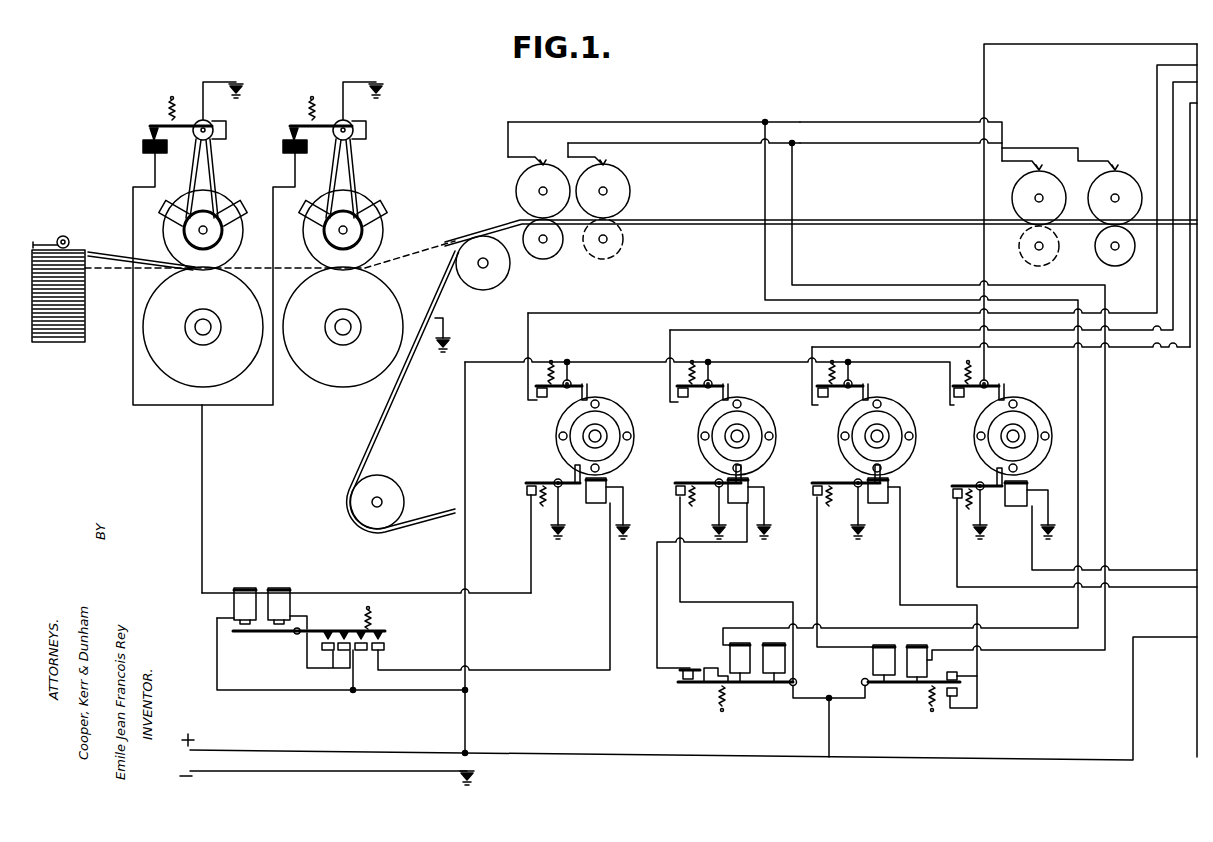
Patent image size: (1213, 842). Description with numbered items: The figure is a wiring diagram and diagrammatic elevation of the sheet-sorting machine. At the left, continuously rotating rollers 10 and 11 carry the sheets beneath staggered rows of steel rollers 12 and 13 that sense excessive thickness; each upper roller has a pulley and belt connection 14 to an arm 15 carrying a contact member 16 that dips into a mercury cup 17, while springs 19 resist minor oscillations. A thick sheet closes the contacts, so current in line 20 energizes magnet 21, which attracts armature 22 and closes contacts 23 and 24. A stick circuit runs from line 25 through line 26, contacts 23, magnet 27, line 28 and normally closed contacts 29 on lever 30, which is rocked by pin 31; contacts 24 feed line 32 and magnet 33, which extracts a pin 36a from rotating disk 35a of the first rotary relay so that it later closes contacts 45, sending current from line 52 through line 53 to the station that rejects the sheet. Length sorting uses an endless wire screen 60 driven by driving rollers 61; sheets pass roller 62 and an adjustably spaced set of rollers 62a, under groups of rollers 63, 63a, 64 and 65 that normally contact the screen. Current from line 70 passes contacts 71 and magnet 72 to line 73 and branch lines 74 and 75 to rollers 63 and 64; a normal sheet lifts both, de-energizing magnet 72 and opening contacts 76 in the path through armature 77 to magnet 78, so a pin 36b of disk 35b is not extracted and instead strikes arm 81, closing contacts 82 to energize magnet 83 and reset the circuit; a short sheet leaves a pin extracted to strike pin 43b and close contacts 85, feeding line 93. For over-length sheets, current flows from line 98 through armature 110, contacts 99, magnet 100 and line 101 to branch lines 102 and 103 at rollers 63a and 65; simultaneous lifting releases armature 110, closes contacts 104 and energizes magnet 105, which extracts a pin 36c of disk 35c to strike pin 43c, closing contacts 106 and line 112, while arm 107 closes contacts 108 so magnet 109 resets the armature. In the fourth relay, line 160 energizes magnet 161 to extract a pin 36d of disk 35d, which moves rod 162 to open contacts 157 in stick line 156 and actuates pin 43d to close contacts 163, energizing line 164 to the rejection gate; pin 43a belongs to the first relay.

The roller 10 is at (240, 302).
The roller 11 is at (376, 296).
The row of steel rollers 12 is at (239, 240).
The row of steel rollers 13 is at (380, 237).
The pulley and belt connection 14 is at (218, 172).
The arm 15 is at (200, 119).
The contact member 16 is at (149, 134).
The mercury cup 17 is at (143, 150).
The spring 19 is at (168, 103).
The line 20 is at (217, 499).
The magnet 21 is at (234, 606).
The armature 22 is at (251, 634).
The contacts 23 is at (333, 663).
The contacts 24 is at (368, 663).
The line 25 is at (399, 750).
The line 26 is at (435, 692).
The magnet 27 is at (291, 606).
The line 28 is at (498, 580).
The contacts 29 is at (528, 494).
The lever 30 is at (529, 486).
The pin 31 is at (572, 480).
The line 32 is at (586, 671).
The magnet 33 is at (590, 503).
The rotating disk 35a is at (632, 425).
The rotating disk 35b is at (772, 420).
The rotating disk 35c is at (907, 418).
The rotating disk 35d is at (1013, 436).
The pins 36a is at (560, 433).
The pins 36b is at (745, 470).
The pins 36c is at (887, 470).
The pins 36d is at (1023, 470).
The pin 43a is at (588, 391).
The pin 43b is at (730, 391).
The pin 43c is at (870, 391).
The pin 43d is at (1007, 391).
The contacts 45 is at (535, 393).
The line 52 is at (470, 412).
The line 53 is at (722, 315).
The endless wire screen 60 is at (714, 218).
The driving rollers 61 is at (505, 282).
The roller 62 is at (590, 256).
The rollers 62a is at (1052, 260).
The group of rollers 63 is at (516, 191).
The group of rollers 63a is at (630, 191).
The group of rollers 64 is at (1012, 206).
The group of rollers 65 is at (1092, 190).
The line 70 is at (824, 691).
The contacts 71 is at (708, 668).
The magnet 72 is at (742, 656).
The line 73 is at (765, 262).
The line 74 is at (702, 119).
The line 75 is at (907, 124).
The contacts 76 is at (683, 675).
The armature 77 is at (750, 687).
The magnet 78 is at (747, 505).
The arm 81 is at (726, 478).
The contacts 82 is at (680, 497).
The magnet 83 is at (786, 661).
The contacts 85 is at (700, 399).
The line 93 is at (670, 335).
The line 98 is at (832, 703).
The contacts 99 is at (957, 676).
The magnet 100 is at (922, 663).
The line 101 is at (795, 200).
The branch line 102 is at (713, 145).
The branch line 103 is at (895, 146).
The contacts 104 is at (957, 700).
The magnet 105 is at (879, 508).
The contacts 106 is at (831, 405).
The arm 107 is at (855, 495).
The contacts 108 is at (817, 497).
The magnet 109 is at (873, 661).
The armature 110 is at (896, 687).
The line 112 is at (1130, 347).
The line 156 is at (1112, 588).
The contacts 157 is at (957, 500).
The line 160 is at (1128, 570).
The magnet 161 is at (1013, 508).
The rod 162 is at (978, 480).
The contacts 163 is at (966, 405).
The line 164 is at (986, 367).